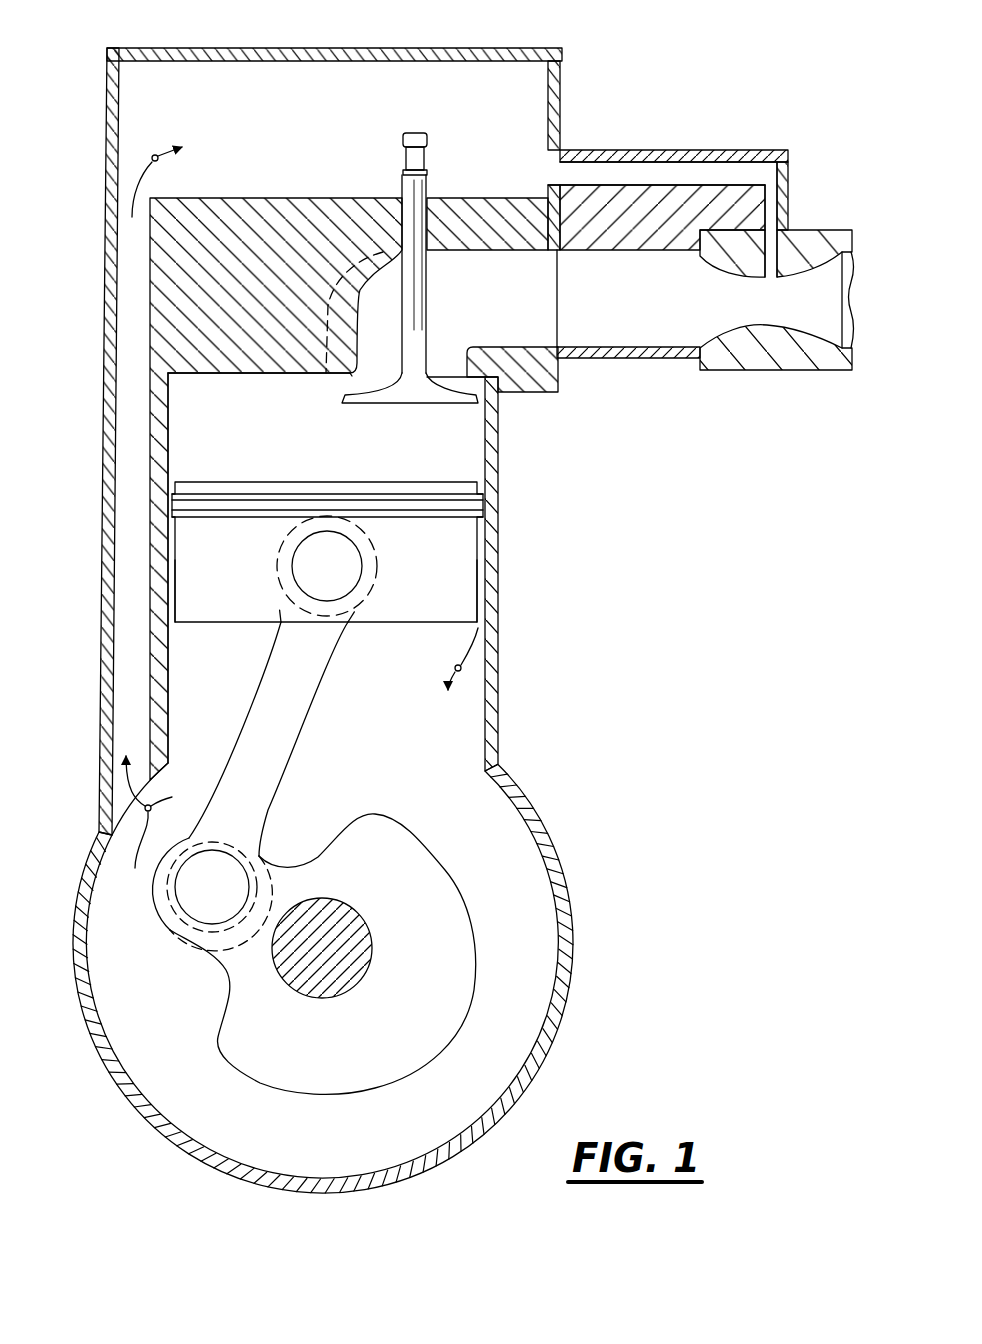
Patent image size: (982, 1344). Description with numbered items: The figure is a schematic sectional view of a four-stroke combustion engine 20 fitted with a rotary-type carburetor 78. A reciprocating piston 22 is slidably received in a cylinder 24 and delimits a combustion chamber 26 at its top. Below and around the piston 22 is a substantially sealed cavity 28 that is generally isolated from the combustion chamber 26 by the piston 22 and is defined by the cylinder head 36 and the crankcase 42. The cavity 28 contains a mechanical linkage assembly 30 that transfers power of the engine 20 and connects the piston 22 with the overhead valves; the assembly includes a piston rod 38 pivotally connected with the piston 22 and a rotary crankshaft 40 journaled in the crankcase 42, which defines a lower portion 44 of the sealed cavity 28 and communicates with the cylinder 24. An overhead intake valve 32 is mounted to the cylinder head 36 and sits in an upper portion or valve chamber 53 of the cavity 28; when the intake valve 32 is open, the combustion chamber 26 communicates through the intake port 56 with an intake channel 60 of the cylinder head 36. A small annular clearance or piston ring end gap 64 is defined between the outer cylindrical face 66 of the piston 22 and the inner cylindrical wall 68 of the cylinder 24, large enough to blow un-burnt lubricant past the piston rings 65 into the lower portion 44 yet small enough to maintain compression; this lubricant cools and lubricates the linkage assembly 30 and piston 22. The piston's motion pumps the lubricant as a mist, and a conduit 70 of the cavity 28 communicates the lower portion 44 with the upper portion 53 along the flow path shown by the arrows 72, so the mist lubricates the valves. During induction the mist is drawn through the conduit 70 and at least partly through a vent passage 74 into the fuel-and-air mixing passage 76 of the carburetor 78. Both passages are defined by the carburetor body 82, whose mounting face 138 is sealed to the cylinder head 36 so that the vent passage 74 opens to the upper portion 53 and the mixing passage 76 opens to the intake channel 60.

The four-stroke combustion engine 20 is at (724, 54).
The reciprocating piston 22 is at (444, 578).
The cylinder 24 is at (497, 556).
The combustion chamber 26 is at (340, 452).
The sealed cavity 28 is at (152, 122).
The mechanical linkage assembly 30 is at (305, 718).
The intake valve 32 is at (418, 132).
The cylinder head 36 is at (193, 48).
The piston rod 38 is at (260, 786).
The crankshaft 40 is at (371, 947).
The crankcase 42 is at (560, 822).
The lower portion of the sealed cavity 44 is at (164, 1030).
The valve chamber 53 is at (222, 110).
The intake port 56 is at (353, 378).
The intake channel 60 is at (524, 315).
The piston ring end gap 64 is at (485, 462).
The piston rings 65 is at (383, 515).
The outer cylindrical face of the piston 66 is at (462, 603).
The inner cylindrical wall of the cylinder 68 is at (183, 600).
The conduit 70 is at (133, 490).
The flow path arrows 72 is at (158, 160).
The vent passage 74 is at (725, 175).
The fuel-and-air mixing passage 76 is at (820, 296).
The rotary-type carburetor 78 is at (822, 207).
The carburetor body 82 is at (625, 157).
The mounting face 138 is at (552, 226).